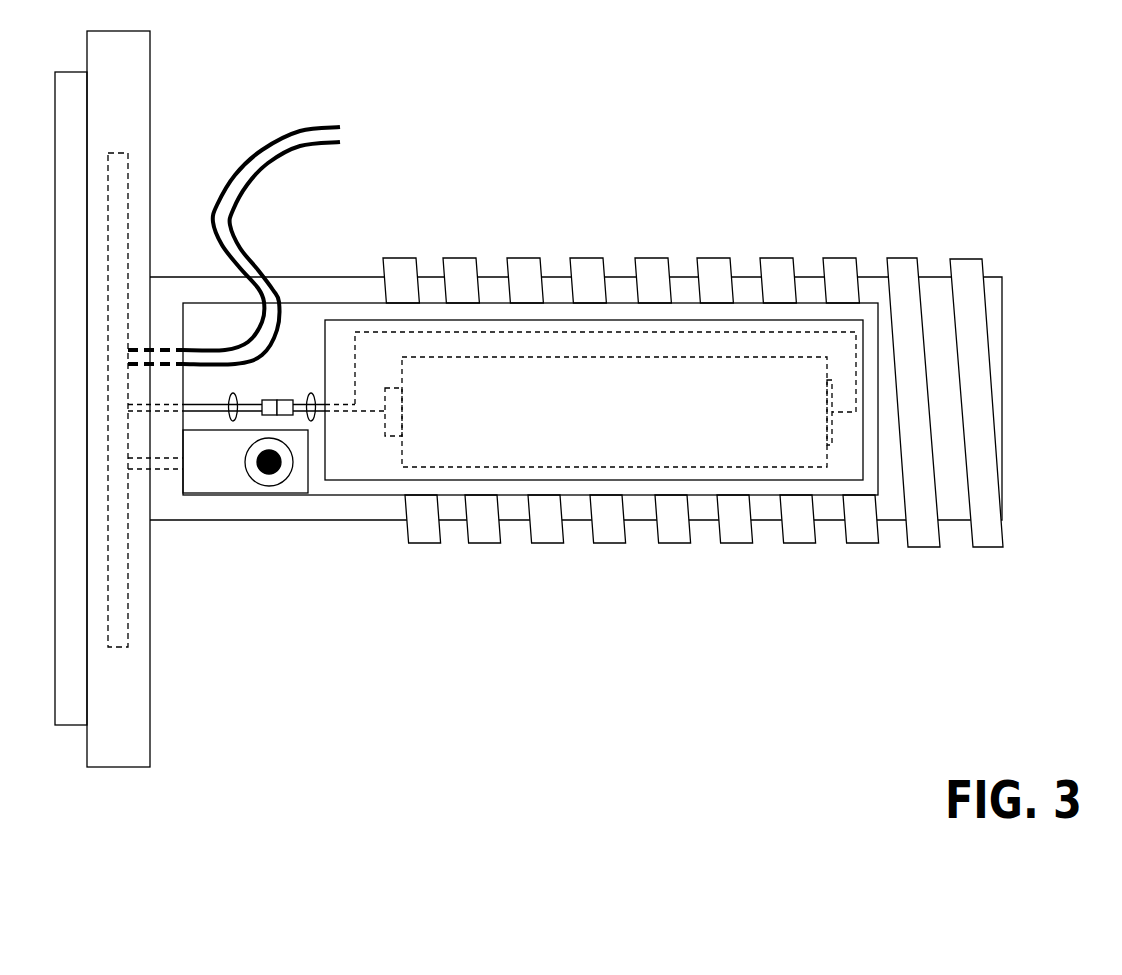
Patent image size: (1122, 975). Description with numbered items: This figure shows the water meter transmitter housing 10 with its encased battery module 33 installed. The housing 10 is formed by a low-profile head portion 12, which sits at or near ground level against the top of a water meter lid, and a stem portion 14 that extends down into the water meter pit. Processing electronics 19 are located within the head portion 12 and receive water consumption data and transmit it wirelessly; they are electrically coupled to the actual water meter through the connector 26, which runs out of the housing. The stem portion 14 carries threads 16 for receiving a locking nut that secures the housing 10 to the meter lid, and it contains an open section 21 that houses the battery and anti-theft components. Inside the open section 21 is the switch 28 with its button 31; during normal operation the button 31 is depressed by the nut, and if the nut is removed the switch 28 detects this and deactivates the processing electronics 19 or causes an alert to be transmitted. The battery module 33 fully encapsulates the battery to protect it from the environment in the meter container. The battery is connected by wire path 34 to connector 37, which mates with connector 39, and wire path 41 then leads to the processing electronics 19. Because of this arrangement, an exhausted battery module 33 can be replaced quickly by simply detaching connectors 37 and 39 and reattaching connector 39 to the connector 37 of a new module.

The water meter transmitter housing 10 is at (865, 704).
The head portion 12 is at (151, 779).
The stem portion 14 is at (225, 522).
The threads 16 is at (1000, 248).
The processing electronics 19 is at (128, 563).
The open section 21 is at (217, 330).
The connector 26 is at (298, 110).
The switch 28 is at (227, 475).
The button 31 is at (269, 474).
The battery module 33 is at (360, 468).
The wire path 34 is at (311, 393).
The connector 37 is at (286, 400).
The connector 39 is at (267, 400).
The wire path 41 is at (233, 393).